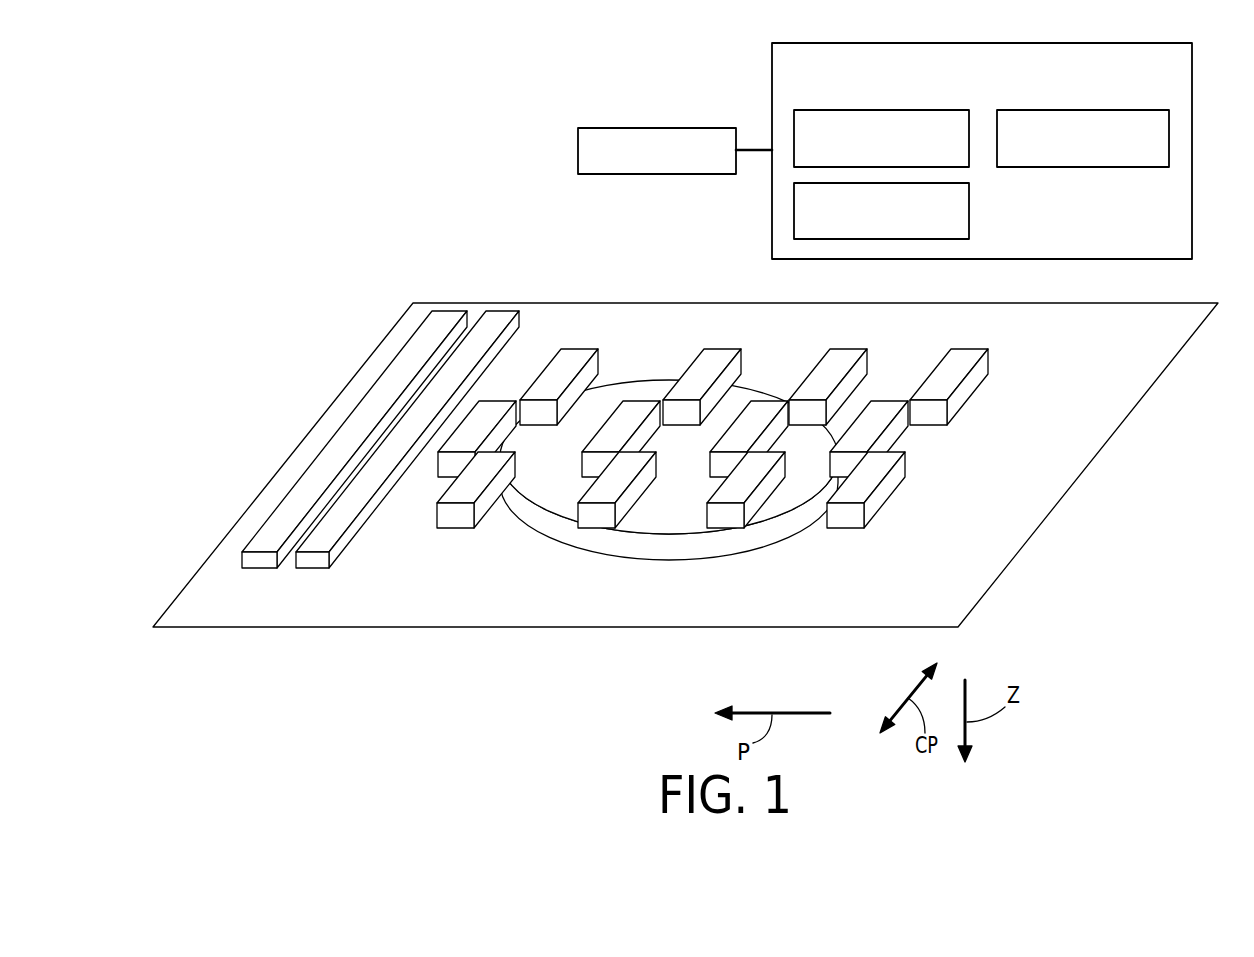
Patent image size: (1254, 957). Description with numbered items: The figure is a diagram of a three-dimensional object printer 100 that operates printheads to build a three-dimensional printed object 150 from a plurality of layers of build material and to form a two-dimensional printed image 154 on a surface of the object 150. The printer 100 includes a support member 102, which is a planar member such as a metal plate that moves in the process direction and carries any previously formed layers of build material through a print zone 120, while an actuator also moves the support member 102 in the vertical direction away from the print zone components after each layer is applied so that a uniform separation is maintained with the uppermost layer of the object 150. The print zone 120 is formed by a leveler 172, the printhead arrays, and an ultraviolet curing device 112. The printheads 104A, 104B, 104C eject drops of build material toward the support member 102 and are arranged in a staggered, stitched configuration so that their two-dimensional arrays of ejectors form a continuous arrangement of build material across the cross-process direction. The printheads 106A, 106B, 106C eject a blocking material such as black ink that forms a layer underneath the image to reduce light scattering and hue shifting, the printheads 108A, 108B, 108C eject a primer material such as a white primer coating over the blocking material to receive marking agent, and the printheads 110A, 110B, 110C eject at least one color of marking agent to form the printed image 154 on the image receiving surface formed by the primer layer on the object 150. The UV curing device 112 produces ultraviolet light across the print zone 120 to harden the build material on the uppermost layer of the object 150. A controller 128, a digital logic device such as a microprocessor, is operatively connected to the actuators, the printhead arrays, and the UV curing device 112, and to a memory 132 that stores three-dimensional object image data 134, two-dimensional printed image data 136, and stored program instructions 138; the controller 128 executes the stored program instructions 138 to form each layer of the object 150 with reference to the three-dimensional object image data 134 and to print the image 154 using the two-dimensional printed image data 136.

The three-dimensional object printer 100 is at (300, 295).
The support member 102 is at (1112, 303).
The printhead 104A is at (970, 349).
The printhead 104B is at (888, 400).
The printhead 104C is at (843, 515).
The printhead 106A is at (843, 349).
The printhead 106B is at (770, 400).
The printhead 106C is at (725, 515).
The printhead 108A is at (722, 349).
The printhead 108B is at (640, 400).
The printhead 108C is at (595, 515).
The printhead 110A is at (580, 349).
The printhead 110B is at (457, 465).
The printhead 110C is at (455, 515).
The UV curing device 112 is at (452, 310).
The leveler 172 is at (500, 310).
The print zone 120 is at (556, 265).
The controller 128 is at (657, 128).
The memory 132 is at (772, 70).
The 3D object image data 134 is at (880, 110).
The 2D printed image data 136 is at (1083, 110).
The stored program instructions 138 is at (970, 210).
The three-dimensional printed object 150 is at (537, 532).
The printed image 154 is at (670, 495).